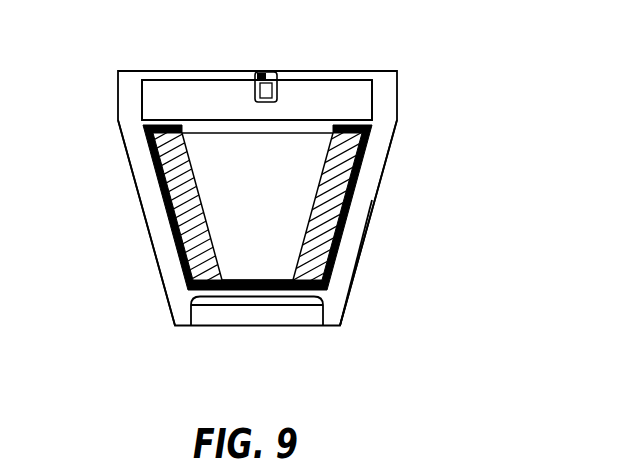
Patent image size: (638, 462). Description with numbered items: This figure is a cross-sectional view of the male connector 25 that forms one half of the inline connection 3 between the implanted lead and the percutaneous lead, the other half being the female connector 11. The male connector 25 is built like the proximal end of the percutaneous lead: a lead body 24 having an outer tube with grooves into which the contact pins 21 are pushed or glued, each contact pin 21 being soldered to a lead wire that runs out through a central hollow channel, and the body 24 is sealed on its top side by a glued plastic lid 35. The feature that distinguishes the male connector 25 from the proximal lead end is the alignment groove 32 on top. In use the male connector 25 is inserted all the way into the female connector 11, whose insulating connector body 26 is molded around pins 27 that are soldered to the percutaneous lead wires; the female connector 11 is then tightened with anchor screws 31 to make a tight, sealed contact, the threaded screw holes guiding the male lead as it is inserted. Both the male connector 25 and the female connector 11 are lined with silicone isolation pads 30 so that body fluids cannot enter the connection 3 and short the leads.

The inline connection 3 is at (434, 69).
The female connector 11 is at (402, 119).
The contact pin 21 is at (345, 242).
The lead body 24 is at (137, 200).
The male connector 25 is at (155, 100).
The connector body 26 is at (362, 197).
The pin 27 is at (310, 290).
The silicone pad 30 is at (343, 270).
The anchor screw 31 is at (260, 75).
The alignment groove 32 is at (267, 104).
The lid 35 is at (352, 97).